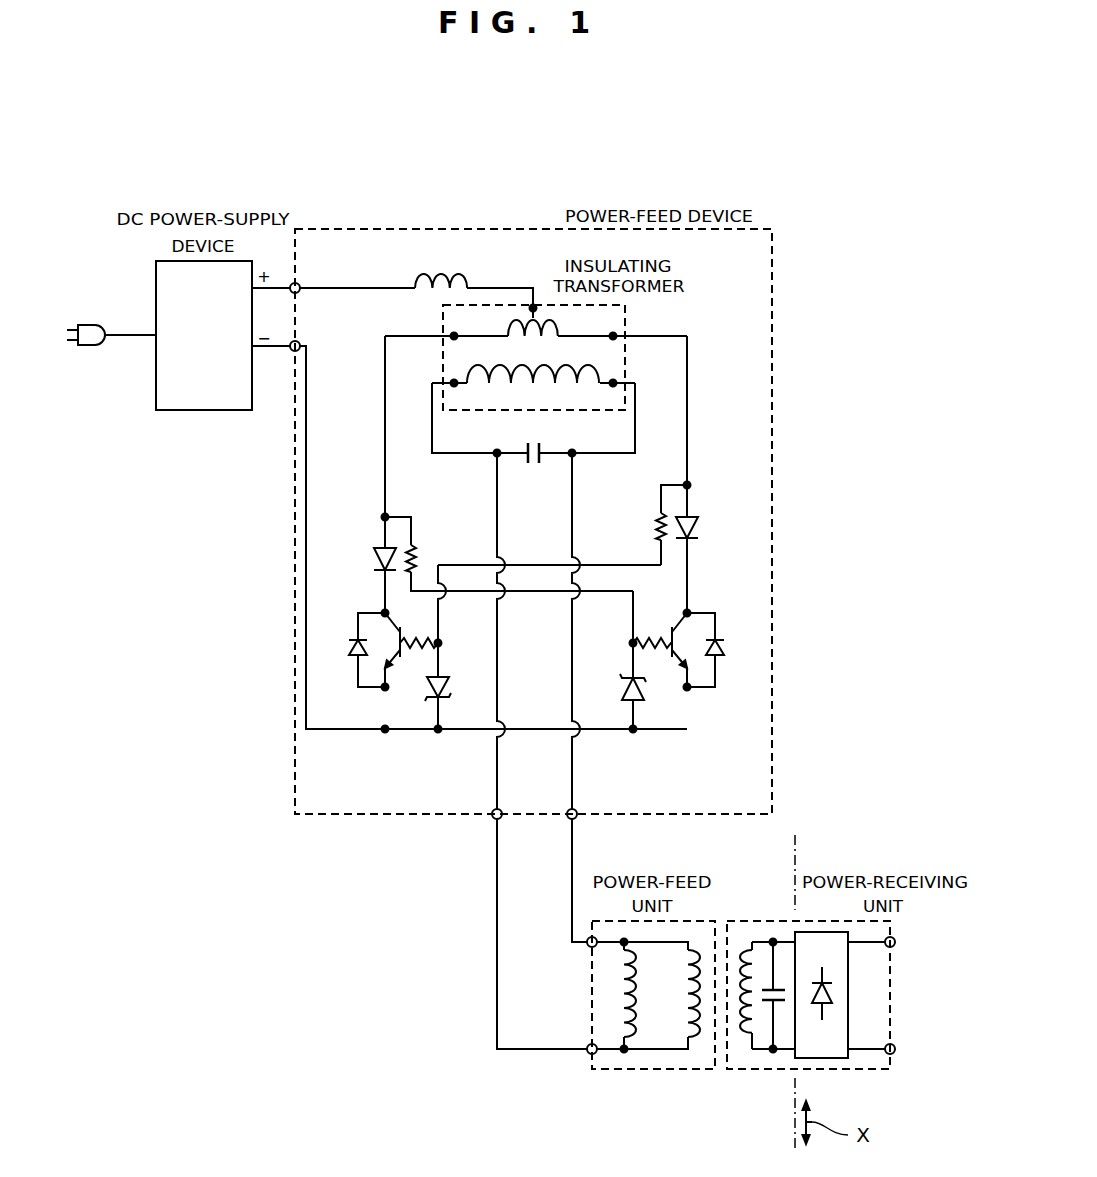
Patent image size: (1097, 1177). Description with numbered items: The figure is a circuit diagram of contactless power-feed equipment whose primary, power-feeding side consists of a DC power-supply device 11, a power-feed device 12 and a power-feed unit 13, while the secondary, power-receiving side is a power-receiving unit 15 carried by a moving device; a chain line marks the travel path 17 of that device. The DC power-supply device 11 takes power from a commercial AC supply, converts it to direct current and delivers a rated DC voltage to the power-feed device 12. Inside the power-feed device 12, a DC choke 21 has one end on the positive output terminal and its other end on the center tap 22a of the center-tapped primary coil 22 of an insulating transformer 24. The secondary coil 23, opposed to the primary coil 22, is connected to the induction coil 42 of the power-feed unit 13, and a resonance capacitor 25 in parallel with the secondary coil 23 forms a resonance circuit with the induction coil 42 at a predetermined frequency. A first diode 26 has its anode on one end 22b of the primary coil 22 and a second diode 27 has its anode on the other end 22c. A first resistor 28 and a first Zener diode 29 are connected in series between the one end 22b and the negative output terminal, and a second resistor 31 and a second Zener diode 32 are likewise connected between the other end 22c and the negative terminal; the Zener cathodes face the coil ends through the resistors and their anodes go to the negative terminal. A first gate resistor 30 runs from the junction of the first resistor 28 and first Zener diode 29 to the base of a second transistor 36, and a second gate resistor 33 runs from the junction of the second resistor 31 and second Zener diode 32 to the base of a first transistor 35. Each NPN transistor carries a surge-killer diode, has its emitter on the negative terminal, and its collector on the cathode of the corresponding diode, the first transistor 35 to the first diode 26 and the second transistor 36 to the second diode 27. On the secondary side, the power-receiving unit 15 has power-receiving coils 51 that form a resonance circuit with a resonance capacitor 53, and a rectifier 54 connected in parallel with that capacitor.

The DC power-supply device 11 is at (188, 410).
The power-feed device 12 is at (772, 240).
The power-feed unit 13 is at (645, 1069).
The power-receiving unit 15 is at (890, 985).
The travel path 17 is at (797, 856).
The DC choke 21 is at (453, 272).
The center-tapped primary coil 22 is at (553, 328).
The center tap 22a is at (533, 306).
The one end of the center-tapped primary coil 22b is at (450, 335).
The other end of the center-tapped primary coil 22c is at (612, 339).
The secondary coil 23 is at (463, 377).
The insulating transformer 24 is at (625, 312).
The resonance capacitor 25 is at (535, 446).
The first diode 26 is at (375, 548).
The second diode 27 is at (699, 528).
The first resistor 28 is at (416, 550).
The first Zener diode 29 is at (622, 676).
The first gate resistor 30 is at (655, 650).
The second resistor 31 is at (656, 522).
The second Zener diode 32 is at (449, 693).
The second gate resistor 33 is at (421, 650).
The first transistor 35 is at (403, 638).
The second transistor 36 is at (671, 632).
The induction coil 42 is at (624, 983).
The power-receiving coils 51 is at (748, 1042).
The resonance capacitor 53 is at (768, 1053).
The rectifier 54 is at (838, 1048).